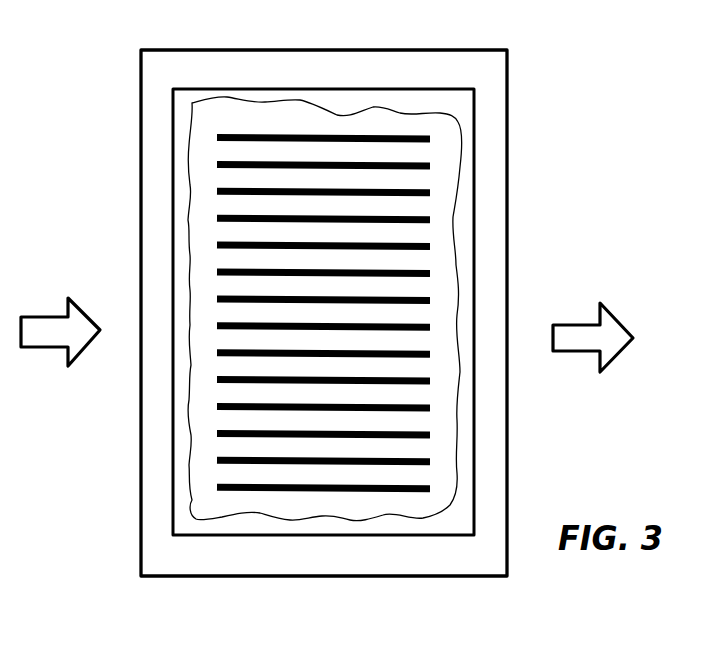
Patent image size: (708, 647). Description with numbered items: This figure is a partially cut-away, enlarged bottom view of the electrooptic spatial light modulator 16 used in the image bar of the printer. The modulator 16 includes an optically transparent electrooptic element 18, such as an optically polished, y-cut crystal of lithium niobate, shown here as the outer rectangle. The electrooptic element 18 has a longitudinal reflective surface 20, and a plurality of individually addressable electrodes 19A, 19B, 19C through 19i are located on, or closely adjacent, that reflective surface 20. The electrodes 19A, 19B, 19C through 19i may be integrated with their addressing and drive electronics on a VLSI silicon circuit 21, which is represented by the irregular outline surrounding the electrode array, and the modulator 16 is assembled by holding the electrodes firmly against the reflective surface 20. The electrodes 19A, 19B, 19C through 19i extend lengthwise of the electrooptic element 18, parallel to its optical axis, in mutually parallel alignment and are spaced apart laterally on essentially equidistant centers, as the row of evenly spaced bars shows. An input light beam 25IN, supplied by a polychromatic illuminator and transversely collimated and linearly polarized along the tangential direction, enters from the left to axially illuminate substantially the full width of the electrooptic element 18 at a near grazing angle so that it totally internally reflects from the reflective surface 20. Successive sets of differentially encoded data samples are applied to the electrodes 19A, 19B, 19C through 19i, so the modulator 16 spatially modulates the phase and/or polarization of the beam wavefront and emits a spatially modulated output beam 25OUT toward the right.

The electrooptic spatial light modulator 16 is at (137, 64).
The electrooptic element 18 is at (139, 481).
The reflective surface 20 is at (236, 562).
The VLSI silicon circuit 21 is at (181, 179).
The individually addressable electrode 19A is at (352, 137).
The individually addressable electrode 19B is at (263, 162).
The individually addressable electrode 19C is at (381, 192).
The individually addressable electrode 19i is at (348, 491).
The input light beam 25IN is at (43, 316).
The output beam 25OUT is at (572, 323).